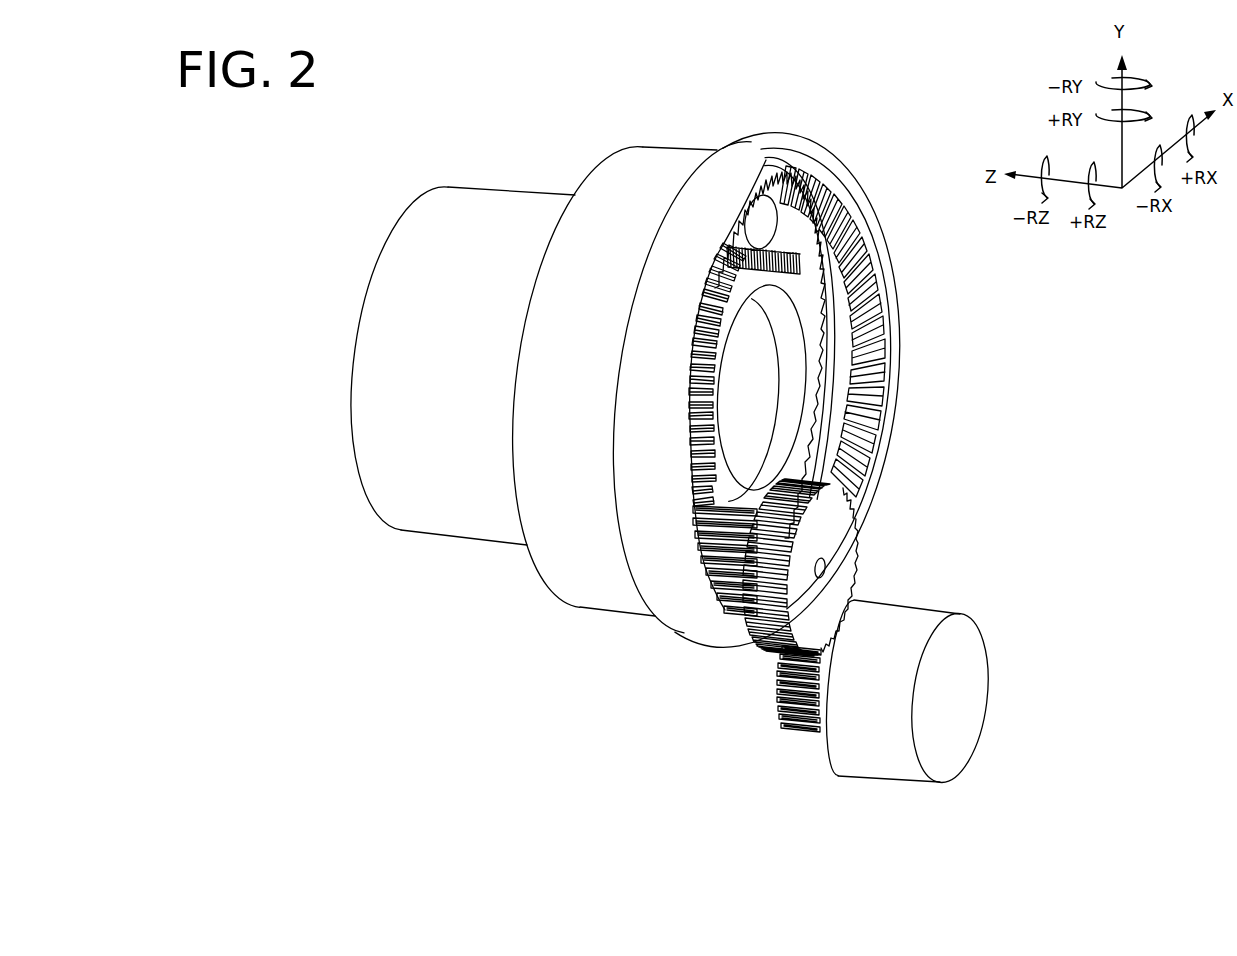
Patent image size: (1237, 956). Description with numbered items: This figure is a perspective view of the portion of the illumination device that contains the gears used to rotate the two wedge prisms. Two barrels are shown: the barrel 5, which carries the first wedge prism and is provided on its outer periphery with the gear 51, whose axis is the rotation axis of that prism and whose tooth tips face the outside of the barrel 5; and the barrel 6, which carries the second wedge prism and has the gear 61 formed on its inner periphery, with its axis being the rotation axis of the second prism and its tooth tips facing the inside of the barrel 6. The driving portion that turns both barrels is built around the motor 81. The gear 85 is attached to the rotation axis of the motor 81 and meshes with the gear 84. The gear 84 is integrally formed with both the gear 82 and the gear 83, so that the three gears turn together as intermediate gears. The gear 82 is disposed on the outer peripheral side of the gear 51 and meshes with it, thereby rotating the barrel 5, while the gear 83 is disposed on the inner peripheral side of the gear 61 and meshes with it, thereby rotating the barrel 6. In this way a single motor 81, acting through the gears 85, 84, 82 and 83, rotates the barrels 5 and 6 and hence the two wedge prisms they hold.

The barrel 5 is at (793, 356).
The barrel 6 is at (500, 208).
The gear 51 is at (762, 195).
The gear 61 is at (860, 213).
The motor 81 is at (887, 760).
The gear 82 is at (738, 605).
The gear 83 is at (742, 633).
The gear 84 is at (777, 652).
The gear 85 is at (800, 713).